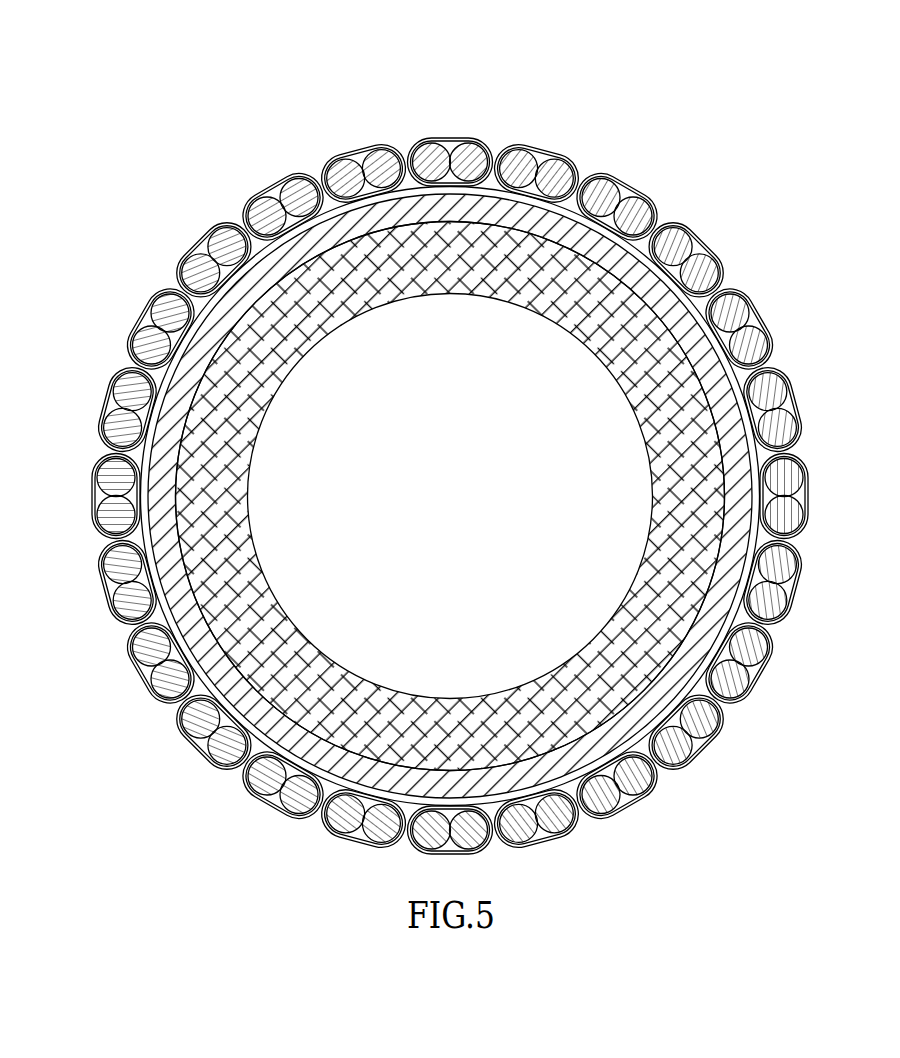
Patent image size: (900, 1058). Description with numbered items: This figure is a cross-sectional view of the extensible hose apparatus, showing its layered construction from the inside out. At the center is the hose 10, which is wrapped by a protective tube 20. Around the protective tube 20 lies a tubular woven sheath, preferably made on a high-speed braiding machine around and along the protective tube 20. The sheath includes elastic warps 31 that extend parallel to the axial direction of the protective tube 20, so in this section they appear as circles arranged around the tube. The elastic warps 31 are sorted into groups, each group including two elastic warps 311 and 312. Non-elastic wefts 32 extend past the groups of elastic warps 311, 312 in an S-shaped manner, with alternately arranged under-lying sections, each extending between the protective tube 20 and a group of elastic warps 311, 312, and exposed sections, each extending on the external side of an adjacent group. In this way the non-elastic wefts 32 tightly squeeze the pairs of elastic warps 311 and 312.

The hose 10 is at (720, 430).
The protective tube 20 is at (727, 308).
The elastic warps 31 is at (450, 431).
The elastic warp 311 is at (429, 145).
The elastic warp 312 is at (480, 124).
The non-elastic wefts 32 is at (553, 158).